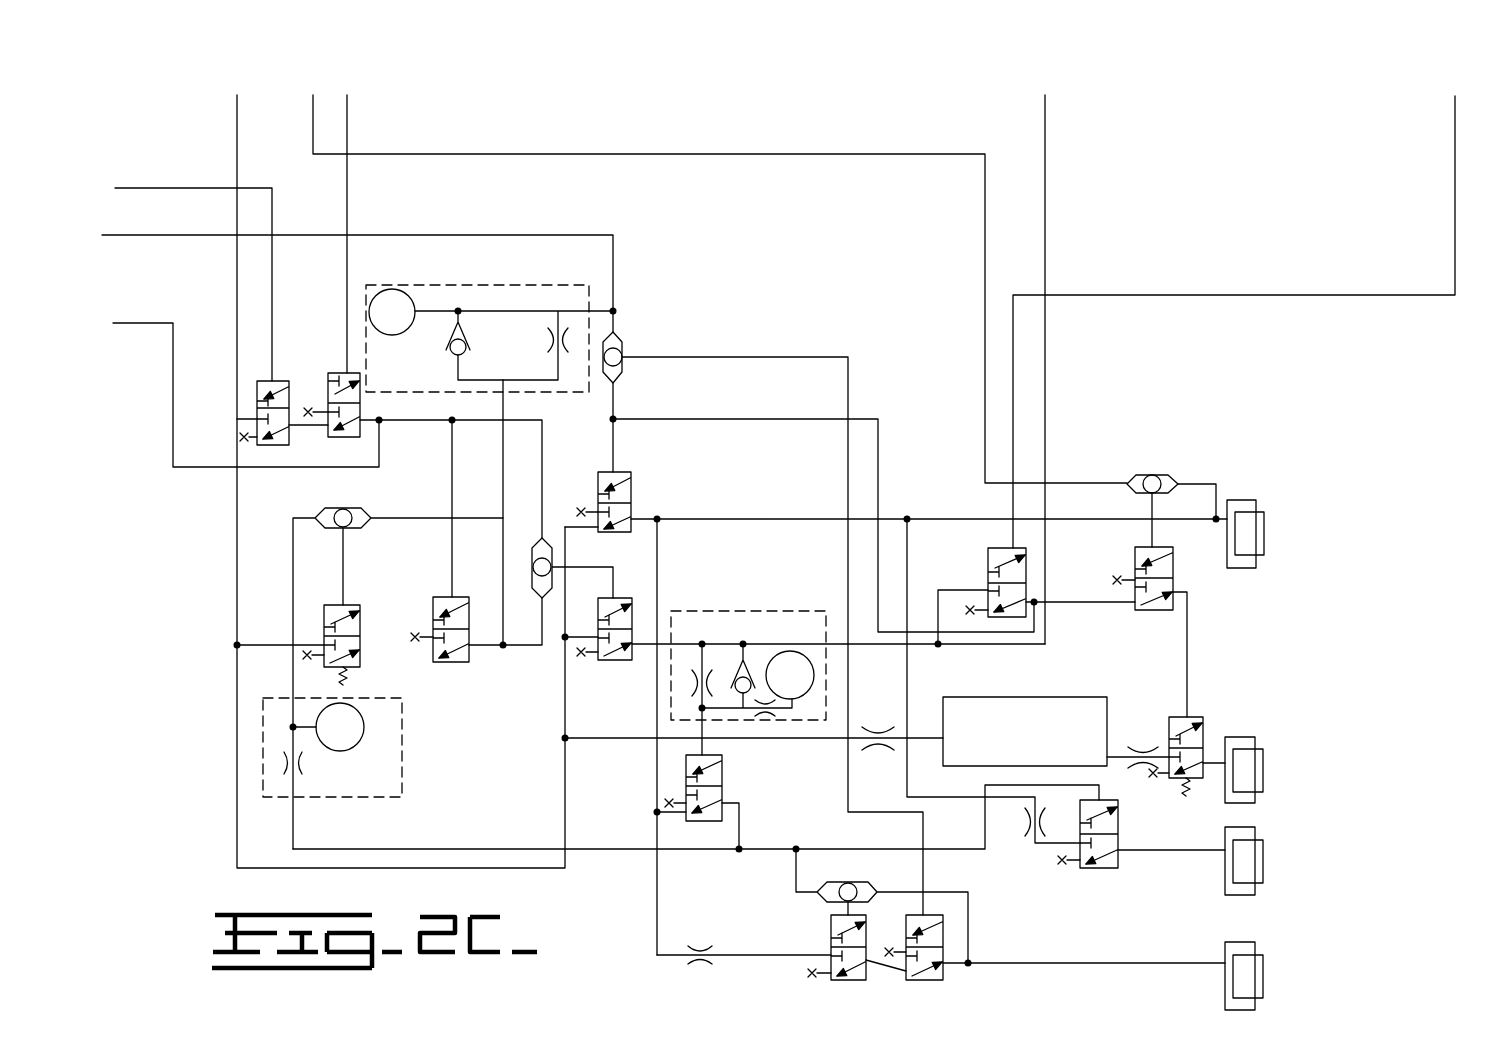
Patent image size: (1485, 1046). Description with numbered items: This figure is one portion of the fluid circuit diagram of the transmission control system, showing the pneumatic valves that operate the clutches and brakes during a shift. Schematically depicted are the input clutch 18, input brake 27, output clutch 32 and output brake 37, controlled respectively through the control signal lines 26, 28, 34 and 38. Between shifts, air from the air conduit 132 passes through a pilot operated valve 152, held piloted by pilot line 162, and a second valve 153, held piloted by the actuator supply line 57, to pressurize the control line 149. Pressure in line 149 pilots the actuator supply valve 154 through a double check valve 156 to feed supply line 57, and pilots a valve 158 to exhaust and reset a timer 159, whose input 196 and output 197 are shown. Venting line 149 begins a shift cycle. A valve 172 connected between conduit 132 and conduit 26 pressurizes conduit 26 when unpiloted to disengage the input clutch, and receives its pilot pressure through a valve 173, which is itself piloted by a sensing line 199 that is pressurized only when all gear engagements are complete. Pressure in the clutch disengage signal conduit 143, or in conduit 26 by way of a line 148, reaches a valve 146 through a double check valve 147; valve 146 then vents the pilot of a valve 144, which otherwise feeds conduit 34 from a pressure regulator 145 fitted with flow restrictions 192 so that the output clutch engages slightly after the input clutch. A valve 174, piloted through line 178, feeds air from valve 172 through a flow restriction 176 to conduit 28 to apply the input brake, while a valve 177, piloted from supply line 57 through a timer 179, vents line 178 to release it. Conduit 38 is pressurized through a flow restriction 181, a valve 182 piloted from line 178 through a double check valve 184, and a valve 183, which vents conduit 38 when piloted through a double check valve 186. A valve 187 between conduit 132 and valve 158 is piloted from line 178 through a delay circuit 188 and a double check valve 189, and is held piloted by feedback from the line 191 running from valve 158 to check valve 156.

The input clutch 18 is at (1266, 528).
The input clutch control signal conduit 26 is at (1073, 519).
The input brake 27 is at (1265, 862).
The input brake control conduit 28 is at (1193, 847).
The output clutch 32 is at (1265, 780).
The output clutch control conduit 34 is at (1213, 760).
The output brake 37 is at (1265, 975).
The output brake control conduit 38 is at (1055, 963).
The actuator supply line 57 is at (1046, 262).
The air conduit 132 is at (237, 675).
The clutch disengage signal conduit 143 is at (562, 155).
The two-position valve 144 is at (1205, 726).
The pressure regulator 145 is at (1050, 697).
The two-position valve 146 is at (1173, 568).
The double check valve 147 is at (1152, 475).
The line 148 is at (1212, 483).
The control line 149 is at (393, 422).
The two-position pilot operated valve 152 is at (282, 380).
The two-position pilot operated valve 153 is at (346, 372).
The actuator supply valve 154 is at (630, 661).
The double check valve 156 is at (548, 540).
The valve 158 is at (447, 663).
The timer 159 is at (484, 285).
The pilot line 162 is at (185, 188).
The two-position pilot operated valve 172 is at (620, 472).
The valve 173 is at (990, 553).
The two-position pilot actuated valve 174 is at (1082, 878).
The flow restriction 176 is at (1028, 822).
The two-position pilot operated valve 177 is at (722, 780).
The line 178 is at (730, 851).
The timer 179 is at (703, 611).
The flow restriction 181 is at (723, 915).
The two-position pilot operated valve 182 is at (831, 926).
The two-position pilot operated valve 183 is at (945, 967).
The double check valve 184 is at (880, 880).
The double check valve 186 is at (621, 337).
The two-position pilot operated valve 187 is at (358, 623).
The delay circuit 188 is at (340, 798).
The double check valve 189 is at (340, 508).
The line 191 is at (520, 648).
The flow restrictions 192 is at (876, 738).
The timer input 196 is at (503, 497).
The timer output 197 is at (603, 305).
The sensing line 199 is at (1205, 296).